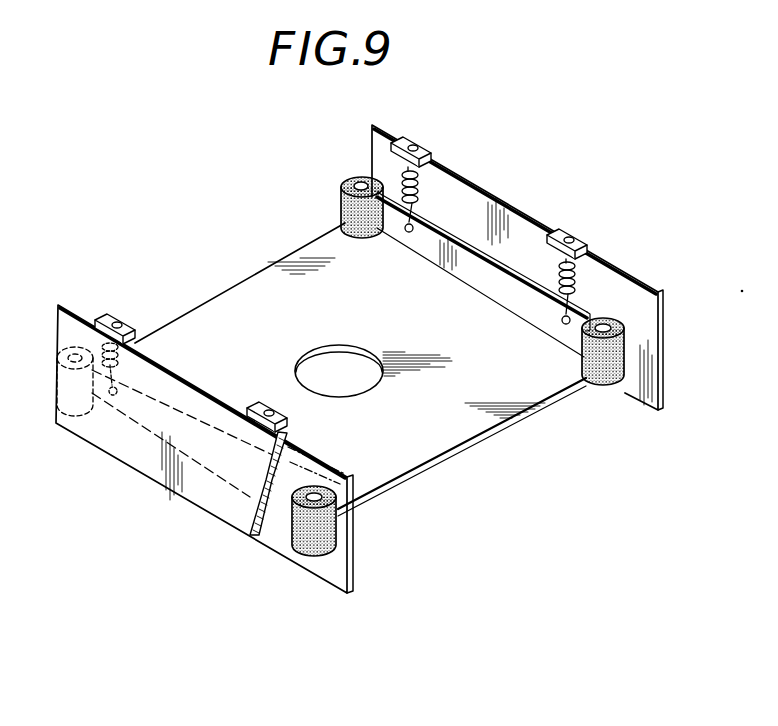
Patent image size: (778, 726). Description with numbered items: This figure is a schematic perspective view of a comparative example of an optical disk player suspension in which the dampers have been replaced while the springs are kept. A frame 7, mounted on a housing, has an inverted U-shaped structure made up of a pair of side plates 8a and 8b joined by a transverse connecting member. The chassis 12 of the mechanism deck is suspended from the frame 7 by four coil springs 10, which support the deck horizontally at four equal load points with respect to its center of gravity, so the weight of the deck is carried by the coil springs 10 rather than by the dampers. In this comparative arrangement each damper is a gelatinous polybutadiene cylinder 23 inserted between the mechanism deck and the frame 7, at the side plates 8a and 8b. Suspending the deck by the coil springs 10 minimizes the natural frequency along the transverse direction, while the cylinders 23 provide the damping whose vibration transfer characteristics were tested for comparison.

The frame 7 is at (526, 206).
The side plate 8a is at (133, 458).
The side plate 8b is at (620, 292).
The coil spring 10 is at (418, 190).
The chassis 12 is at (447, 432).
The gelatinous polybutadiene cylinder 23 is at (350, 190).